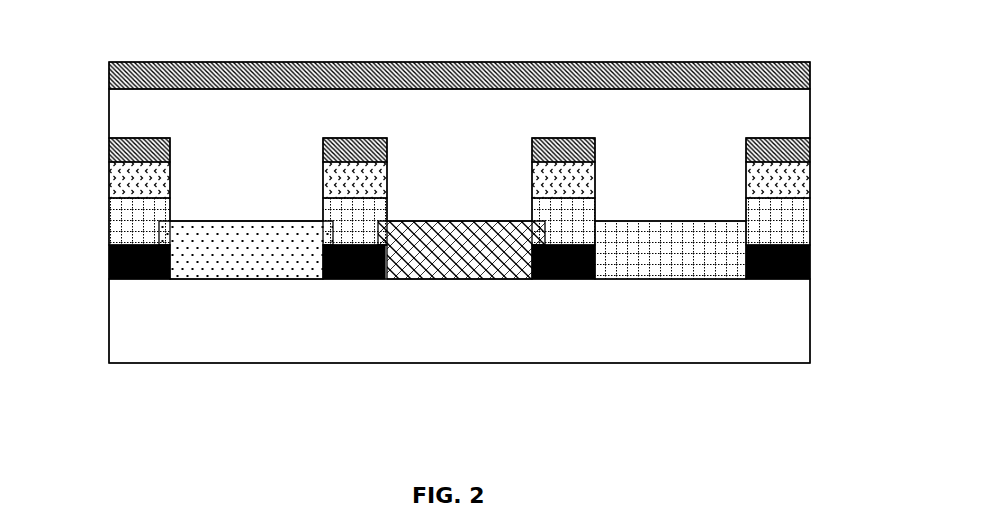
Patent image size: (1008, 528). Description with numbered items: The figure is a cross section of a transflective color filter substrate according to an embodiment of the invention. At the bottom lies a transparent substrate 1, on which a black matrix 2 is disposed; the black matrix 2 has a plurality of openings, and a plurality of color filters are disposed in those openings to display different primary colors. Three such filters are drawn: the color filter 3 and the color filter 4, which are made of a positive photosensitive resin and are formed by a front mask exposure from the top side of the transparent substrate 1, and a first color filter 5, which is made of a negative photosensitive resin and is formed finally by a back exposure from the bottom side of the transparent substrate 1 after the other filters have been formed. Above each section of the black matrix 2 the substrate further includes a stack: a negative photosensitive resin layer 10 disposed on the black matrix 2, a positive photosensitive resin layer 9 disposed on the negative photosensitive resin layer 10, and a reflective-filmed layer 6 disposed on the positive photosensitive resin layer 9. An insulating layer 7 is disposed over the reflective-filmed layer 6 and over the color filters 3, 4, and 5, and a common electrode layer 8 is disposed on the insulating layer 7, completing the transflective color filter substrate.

The transparent substrate 1 is at (792, 313).
The black matrix 2 is at (110, 260).
The color filter 3 is at (257, 245).
The color filter 4 is at (468, 279).
The first color filter 5 is at (685, 245).
The reflective-filmed layer 6 is at (803, 148).
The insulating layer 7 is at (130, 114).
The common electrode layer 8 is at (130, 78).
The positive photosensitive resin layer 9 is at (798, 185).
The negative photosensitive resin layer 10 is at (158, 220).